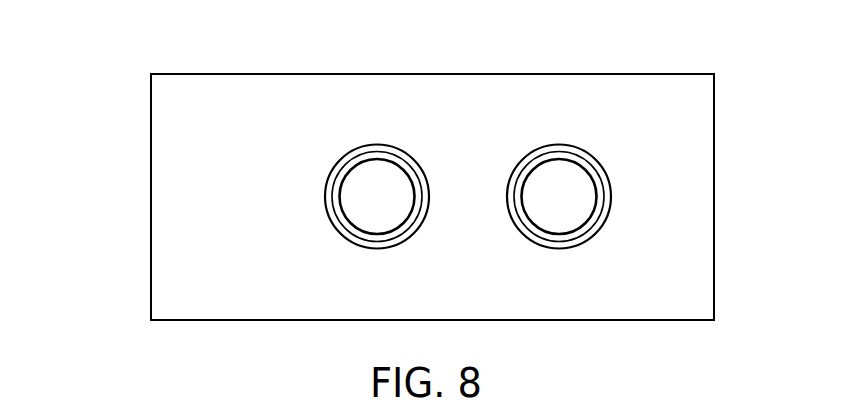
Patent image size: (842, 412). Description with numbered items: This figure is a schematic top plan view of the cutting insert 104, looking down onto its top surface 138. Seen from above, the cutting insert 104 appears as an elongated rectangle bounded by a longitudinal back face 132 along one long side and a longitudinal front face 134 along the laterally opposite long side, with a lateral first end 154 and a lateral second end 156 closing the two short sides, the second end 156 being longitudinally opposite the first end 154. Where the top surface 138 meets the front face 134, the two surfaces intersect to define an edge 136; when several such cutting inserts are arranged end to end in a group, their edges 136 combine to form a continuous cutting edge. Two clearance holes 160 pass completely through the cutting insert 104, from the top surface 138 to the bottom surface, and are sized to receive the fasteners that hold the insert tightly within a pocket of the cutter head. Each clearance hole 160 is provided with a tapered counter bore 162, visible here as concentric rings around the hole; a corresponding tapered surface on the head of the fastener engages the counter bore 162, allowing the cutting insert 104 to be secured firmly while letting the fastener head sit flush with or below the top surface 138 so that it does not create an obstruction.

The cutting insert 104 is at (125, 100).
The longitudinal back face 132 is at (470, 74).
The top surface 138 is at (631, 97).
The longitudinal front face 134 is at (247, 322).
The edge 136 is at (549, 321).
The lateral second end 156 is at (151, 190).
The lateral first end 154 is at (714, 190).
The clearance holes 160 is at (378, 160).
The tapered counter bore 162 is at (329, 216).